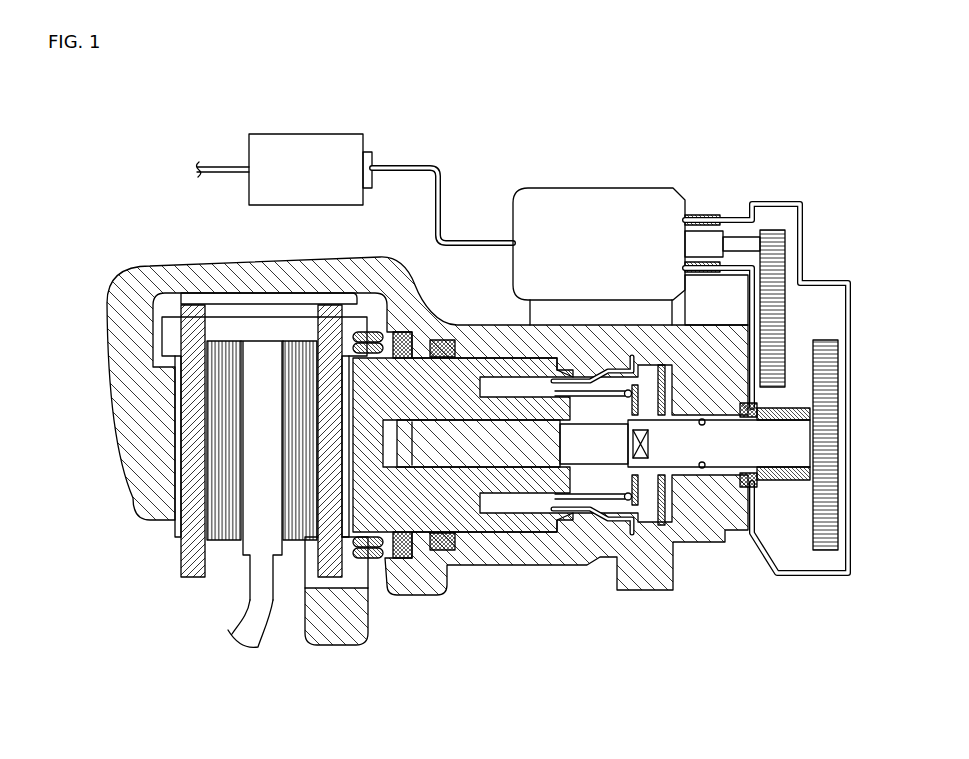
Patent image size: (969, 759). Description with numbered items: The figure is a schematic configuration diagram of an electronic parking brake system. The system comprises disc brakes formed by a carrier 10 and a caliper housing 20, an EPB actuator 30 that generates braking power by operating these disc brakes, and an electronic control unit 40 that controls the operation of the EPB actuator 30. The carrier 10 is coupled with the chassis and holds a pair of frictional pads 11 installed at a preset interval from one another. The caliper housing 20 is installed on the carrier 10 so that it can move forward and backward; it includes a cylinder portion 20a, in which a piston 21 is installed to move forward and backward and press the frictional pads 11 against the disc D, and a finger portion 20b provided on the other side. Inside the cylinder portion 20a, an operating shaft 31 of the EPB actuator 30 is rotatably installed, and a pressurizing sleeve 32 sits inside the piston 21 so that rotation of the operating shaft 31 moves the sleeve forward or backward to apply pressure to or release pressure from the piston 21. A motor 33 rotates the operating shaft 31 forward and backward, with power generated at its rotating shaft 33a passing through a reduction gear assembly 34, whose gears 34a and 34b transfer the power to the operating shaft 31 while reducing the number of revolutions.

The carrier 10 is at (282, 503).
The frictional pads 11 is at (185, 548).
The caliper housing 20 is at (416, 418).
The cylinder portion 20a is at (590, 537).
The finger portion 20b is at (143, 502).
The piston 21 is at (468, 505).
The EPB actuator 30 is at (709, 342).
The operating shaft 31 is at (492, 460).
The pressurizing sleeve 32 is at (428, 490).
The motor 33 is at (636, 234).
The rotating shaft 33a is at (740, 245).
The reduction gear assembly 34 is at (795, 388).
The gear 34a is at (778, 283).
The gear 34b is at (832, 357).
The electronic control unit 40 is at (278, 134).
The disc D is at (235, 618).